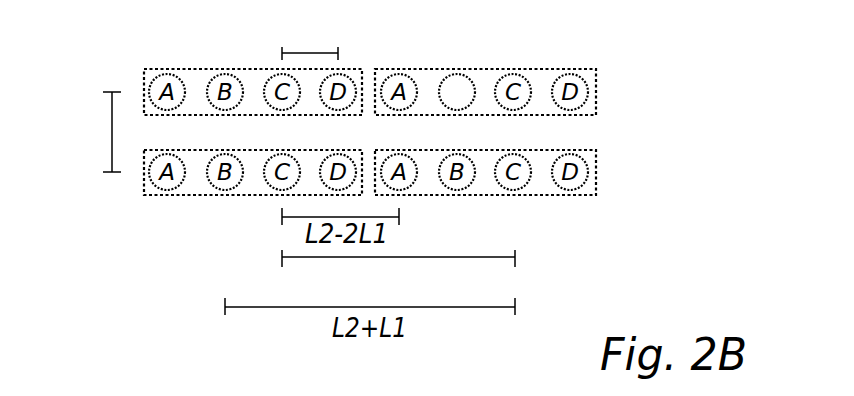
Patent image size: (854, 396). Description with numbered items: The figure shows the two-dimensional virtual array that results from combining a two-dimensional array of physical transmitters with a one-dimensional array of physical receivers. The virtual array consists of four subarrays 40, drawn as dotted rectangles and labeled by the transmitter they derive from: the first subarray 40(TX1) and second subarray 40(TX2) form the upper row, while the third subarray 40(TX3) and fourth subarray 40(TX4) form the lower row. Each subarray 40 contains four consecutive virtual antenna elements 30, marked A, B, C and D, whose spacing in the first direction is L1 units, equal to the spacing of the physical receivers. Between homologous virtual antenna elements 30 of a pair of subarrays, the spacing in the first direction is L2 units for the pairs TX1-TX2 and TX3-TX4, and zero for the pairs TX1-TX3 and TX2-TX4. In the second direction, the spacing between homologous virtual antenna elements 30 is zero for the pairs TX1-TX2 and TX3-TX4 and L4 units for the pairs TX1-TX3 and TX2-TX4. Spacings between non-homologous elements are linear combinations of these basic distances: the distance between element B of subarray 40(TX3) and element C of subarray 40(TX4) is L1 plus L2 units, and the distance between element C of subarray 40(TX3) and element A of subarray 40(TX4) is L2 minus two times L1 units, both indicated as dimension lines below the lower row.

The subarray 40 is at (363, 135).
The virtual antenna element 30 is at (448, 77).
The first transmitter subarray TX1 is at (188, 69).
The second transmitter subarray TX2 is at (597, 38).
The third transmitter subarray TX3 is at (183, 197).
The fourth transmitter subarray TX4 is at (598, 227).
The inter-element spacing L1 is at (310, 43).
The subarray spacing in first direction L2 is at (398, 270).
The subarray spacing in second direction L4 is at (97, 132).